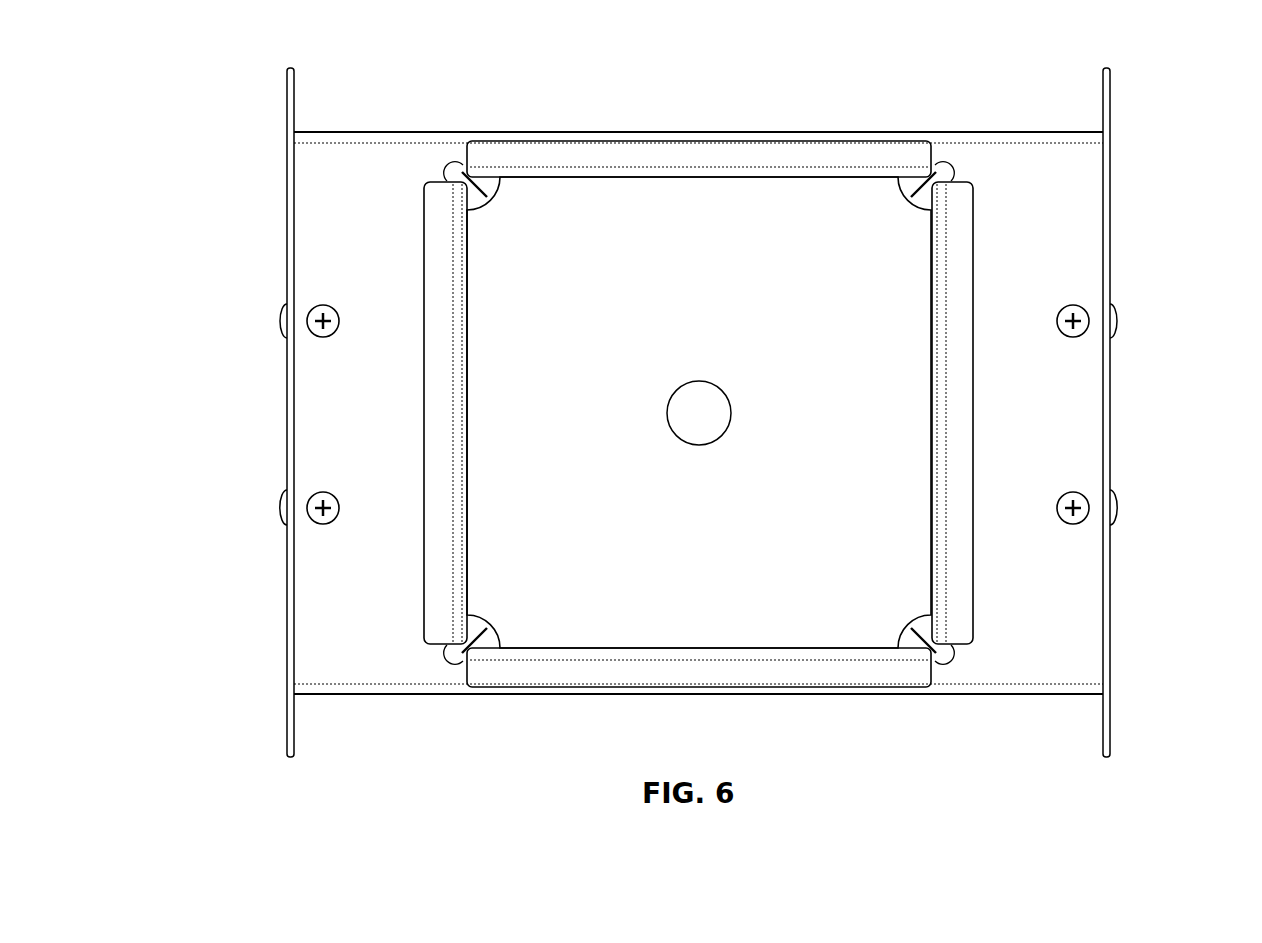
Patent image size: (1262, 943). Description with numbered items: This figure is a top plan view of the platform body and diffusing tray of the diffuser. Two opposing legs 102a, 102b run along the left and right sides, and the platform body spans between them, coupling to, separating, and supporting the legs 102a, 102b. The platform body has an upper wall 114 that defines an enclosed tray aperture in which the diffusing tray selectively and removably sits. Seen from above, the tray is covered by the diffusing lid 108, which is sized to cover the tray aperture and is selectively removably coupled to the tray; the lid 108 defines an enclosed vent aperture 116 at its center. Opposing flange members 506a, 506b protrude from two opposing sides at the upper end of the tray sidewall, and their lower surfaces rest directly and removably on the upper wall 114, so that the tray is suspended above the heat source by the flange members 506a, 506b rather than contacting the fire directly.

The opposing leg 102a is at (287, 639).
The opposing leg 102b is at (1110, 647).
The upper wall 114 is at (388, 268).
The diffusing lid 108 is at (722, 246).
The enclosed vent aperture 116 is at (719, 424).
The opposing flange member 506a is at (427, 410).
The opposing flange member 506b is at (970, 360).